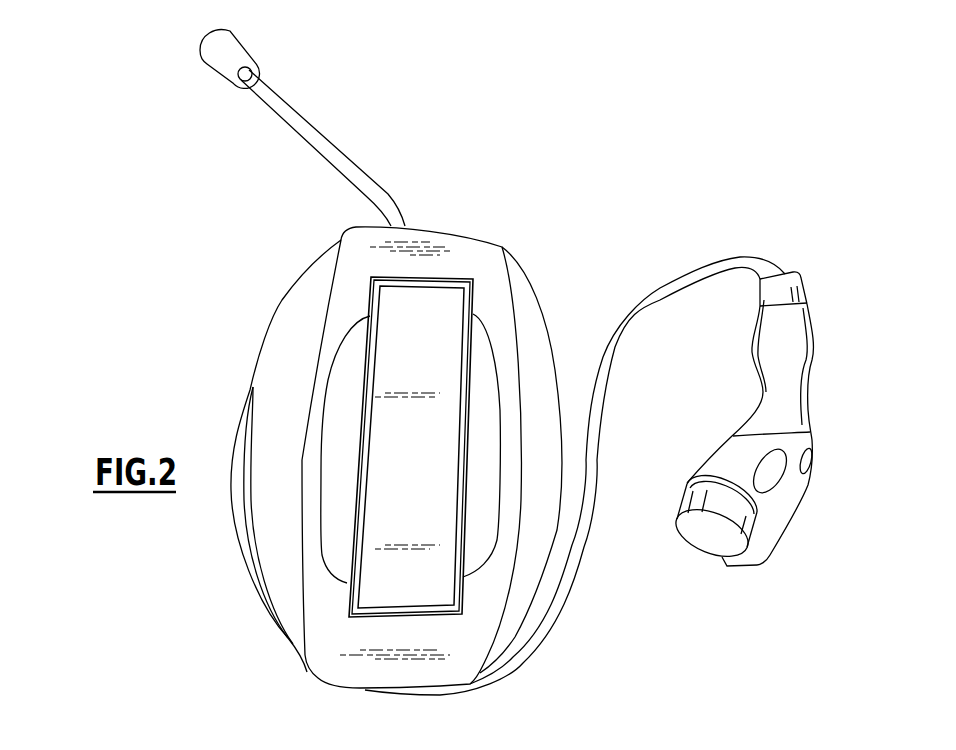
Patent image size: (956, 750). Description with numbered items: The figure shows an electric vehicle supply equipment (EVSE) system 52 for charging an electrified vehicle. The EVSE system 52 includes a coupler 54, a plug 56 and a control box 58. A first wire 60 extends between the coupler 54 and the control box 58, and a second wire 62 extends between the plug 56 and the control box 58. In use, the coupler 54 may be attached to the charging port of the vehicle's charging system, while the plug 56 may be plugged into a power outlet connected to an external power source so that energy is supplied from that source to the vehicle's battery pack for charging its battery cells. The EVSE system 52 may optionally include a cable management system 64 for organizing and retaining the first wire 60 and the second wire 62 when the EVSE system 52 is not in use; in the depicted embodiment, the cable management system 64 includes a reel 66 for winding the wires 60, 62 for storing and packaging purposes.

The EVSE system 52 is at (507, 348).
The coupler 54 is at (733, 419).
The plug 56 is at (260, 45).
The control box 58 is at (457, 447).
The first wire 60 is at (514, 476).
The second wire 62 is at (323, 139).
The cable management system 64 is at (435, 442).
The reel 66 is at (533, 284).